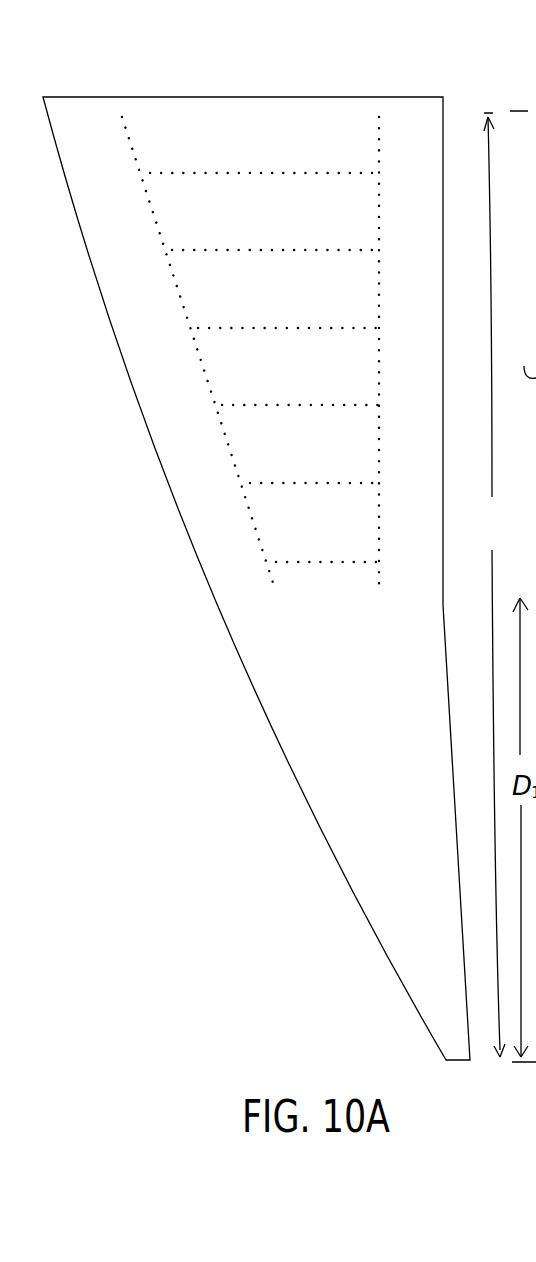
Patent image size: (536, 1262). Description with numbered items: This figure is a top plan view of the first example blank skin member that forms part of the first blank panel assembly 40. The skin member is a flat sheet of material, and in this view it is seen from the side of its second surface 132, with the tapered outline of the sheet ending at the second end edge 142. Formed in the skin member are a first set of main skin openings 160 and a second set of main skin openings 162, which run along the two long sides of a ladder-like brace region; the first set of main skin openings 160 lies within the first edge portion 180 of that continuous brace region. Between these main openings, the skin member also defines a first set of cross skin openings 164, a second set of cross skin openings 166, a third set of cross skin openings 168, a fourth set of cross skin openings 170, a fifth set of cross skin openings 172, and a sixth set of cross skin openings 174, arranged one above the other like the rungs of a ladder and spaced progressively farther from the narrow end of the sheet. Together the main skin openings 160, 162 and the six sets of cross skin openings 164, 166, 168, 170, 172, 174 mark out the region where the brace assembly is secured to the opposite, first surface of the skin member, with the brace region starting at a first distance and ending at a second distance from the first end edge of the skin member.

The first blank panel assembly 40 is at (248, 80).
The second surface 132 is at (344, 770).
The second end edge 142 is at (523, 356).
The first set of main skin openings 160 is at (133, 152).
The second set of main skin openings 162 is at (381, 147).
The first set of cross skin openings 164 is at (300, 562).
The second set of cross skin openings 166 is at (282, 483).
The third set of cross skin openings 168 is at (272, 405).
The fourth set of cross skin openings 170 is at (270, 328).
The fifth set of cross skin openings 172 is at (266, 250).
The sixth set of cross skin openings 174 is at (265, 173).
The first edge portion 180 is at (509, 586).